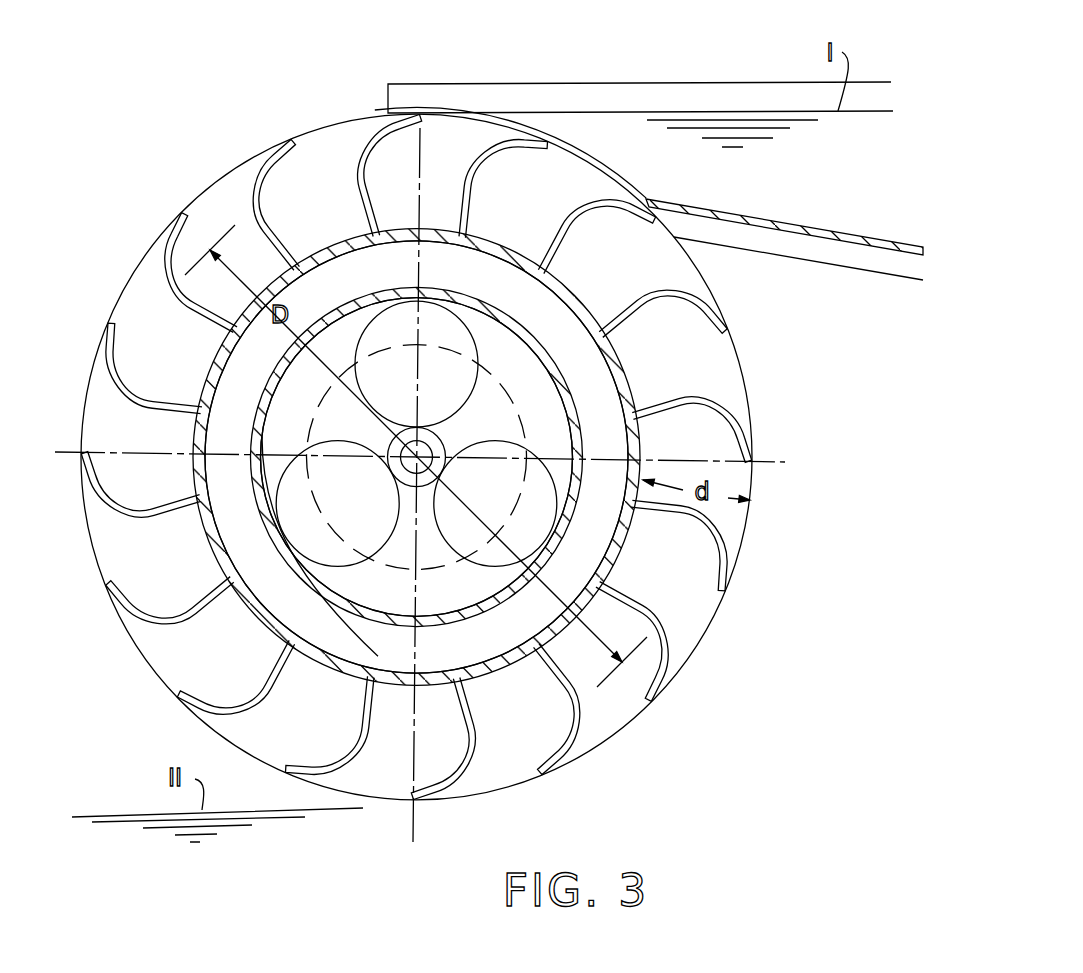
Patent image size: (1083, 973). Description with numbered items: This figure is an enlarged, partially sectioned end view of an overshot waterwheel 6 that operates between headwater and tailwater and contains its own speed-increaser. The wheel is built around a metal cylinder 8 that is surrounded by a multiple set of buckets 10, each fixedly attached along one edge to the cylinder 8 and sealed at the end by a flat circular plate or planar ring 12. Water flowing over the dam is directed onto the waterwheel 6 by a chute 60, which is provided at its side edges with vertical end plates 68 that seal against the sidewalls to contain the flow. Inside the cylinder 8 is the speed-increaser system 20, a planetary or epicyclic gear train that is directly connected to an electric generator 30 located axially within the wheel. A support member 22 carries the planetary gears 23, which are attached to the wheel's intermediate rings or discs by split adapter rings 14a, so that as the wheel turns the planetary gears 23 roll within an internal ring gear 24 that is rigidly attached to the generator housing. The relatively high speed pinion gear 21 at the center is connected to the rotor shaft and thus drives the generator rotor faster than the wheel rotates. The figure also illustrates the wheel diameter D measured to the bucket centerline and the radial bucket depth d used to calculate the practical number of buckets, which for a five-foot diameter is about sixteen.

The overshot waterwheel 6 is at (188, 197).
The metal cylinder 8 is at (250, 563).
The buckets 10 is at (91, 533).
The planar ring 12 is at (686, 608).
The split adapter rings 14a is at (270, 590).
The speed-increaser system 20 is at (386, 575).
The pinion gear 21 is at (437, 441).
The support member 22 is at (463, 585).
The planetary gears 23 is at (416, 433).
The internal ring gear 24 is at (255, 390).
The electric generator 30 is at (524, 428).
The chute 60 is at (743, 216).
The vertical end plates 68 is at (690, 82).